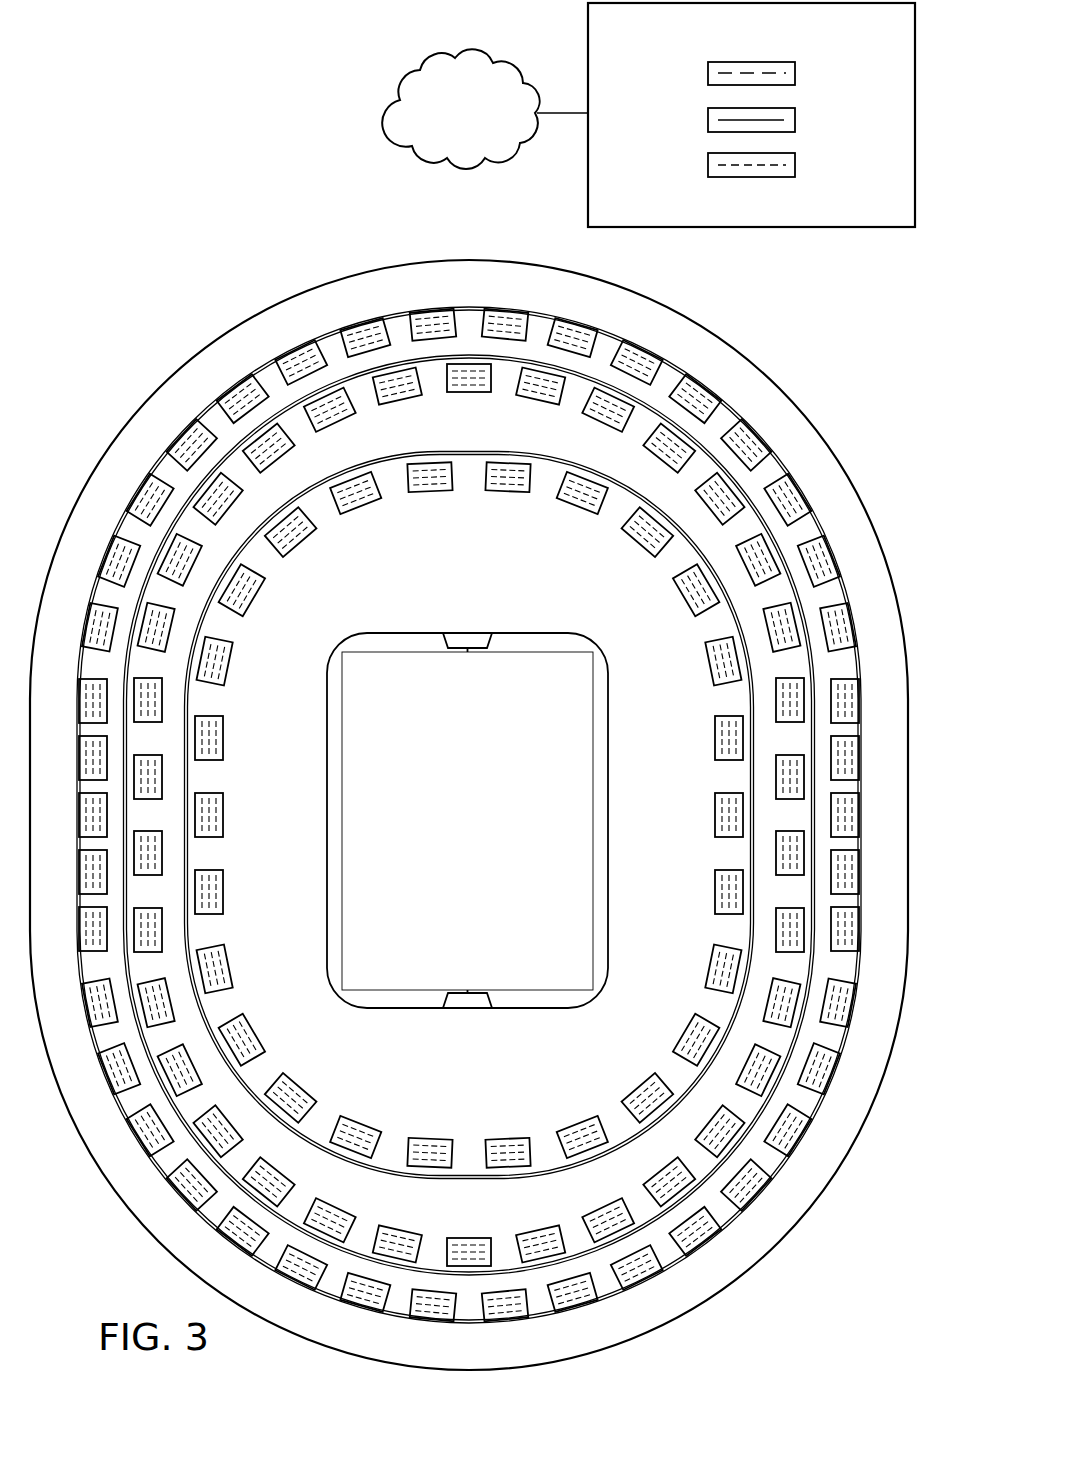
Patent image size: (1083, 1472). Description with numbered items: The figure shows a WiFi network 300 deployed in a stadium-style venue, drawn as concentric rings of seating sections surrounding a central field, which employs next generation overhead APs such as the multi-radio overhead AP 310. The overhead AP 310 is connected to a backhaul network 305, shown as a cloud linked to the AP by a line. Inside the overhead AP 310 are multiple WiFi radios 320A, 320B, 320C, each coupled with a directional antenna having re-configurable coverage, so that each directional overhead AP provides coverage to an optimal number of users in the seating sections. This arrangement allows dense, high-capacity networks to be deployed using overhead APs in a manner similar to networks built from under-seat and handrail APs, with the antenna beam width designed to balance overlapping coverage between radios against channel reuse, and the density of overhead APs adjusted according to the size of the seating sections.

The WiFi network 300 is at (158, 172).
The backhaul network 305 is at (486, 129).
The next generation overhead AP 310 is at (833, 236).
The WiFi radio 320A is at (795, 70).
The WiFi radio 320B is at (708, 117).
The WiFi radio 320C is at (823, 178).